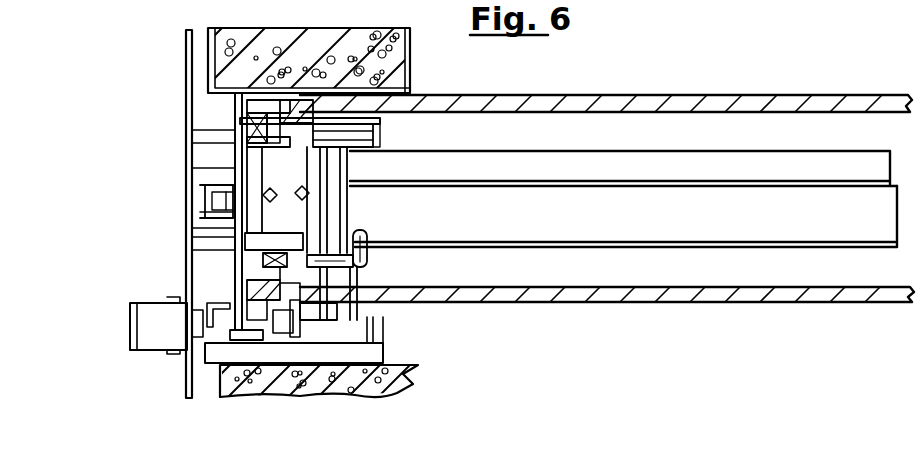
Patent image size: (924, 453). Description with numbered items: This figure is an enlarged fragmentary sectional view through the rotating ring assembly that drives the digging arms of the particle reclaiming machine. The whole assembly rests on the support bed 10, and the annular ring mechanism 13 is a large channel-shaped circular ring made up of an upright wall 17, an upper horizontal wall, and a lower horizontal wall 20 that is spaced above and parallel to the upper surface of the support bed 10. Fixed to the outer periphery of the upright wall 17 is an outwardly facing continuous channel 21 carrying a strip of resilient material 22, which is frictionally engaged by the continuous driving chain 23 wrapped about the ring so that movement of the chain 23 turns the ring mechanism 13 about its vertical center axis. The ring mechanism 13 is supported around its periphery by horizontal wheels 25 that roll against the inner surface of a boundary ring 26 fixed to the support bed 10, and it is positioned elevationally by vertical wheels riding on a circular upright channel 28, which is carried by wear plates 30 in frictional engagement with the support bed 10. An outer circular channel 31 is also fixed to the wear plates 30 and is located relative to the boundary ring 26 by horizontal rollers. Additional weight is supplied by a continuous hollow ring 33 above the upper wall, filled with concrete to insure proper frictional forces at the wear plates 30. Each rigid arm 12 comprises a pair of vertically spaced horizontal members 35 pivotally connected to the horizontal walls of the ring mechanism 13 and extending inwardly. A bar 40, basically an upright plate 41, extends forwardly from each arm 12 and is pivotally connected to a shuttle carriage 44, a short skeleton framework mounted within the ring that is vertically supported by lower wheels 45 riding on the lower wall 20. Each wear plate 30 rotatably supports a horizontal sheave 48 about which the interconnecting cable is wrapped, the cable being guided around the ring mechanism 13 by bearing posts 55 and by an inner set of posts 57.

The support bed 10 is at (410, 362).
The rigid arm 12 is at (474, 95).
The ring mechanism 13 is at (230, 143).
The upright wall 17 is at (237, 248).
The lower horizontal wall 20 is at (376, 279).
The continuous channel 21 is at (200, 181).
The strip of resilient material 22 is at (200, 229).
The driving chain 23 is at (205, 203).
The horizontal wheel 25 is at (203, 133).
The boundary ring 26 is at (187, 64).
The circular upright channel 28 is at (281, 328).
The wear plate 30 is at (379, 349).
The outer circular channel 31 is at (207, 350).
The continuous hollow ring 33 is at (309, 36).
The horizontal member 35 is at (537, 101).
The bar 40 is at (620, 249).
The upright plate 41 is at (601, 174).
The shuttle carriage 44 is at (384, 131).
The lower wheel 45 is at (364, 234).
The horizontal sheave 48 is at (272, 330).
The bearing post 55 is at (320, 380).
The inner post 57 is at (351, 320).